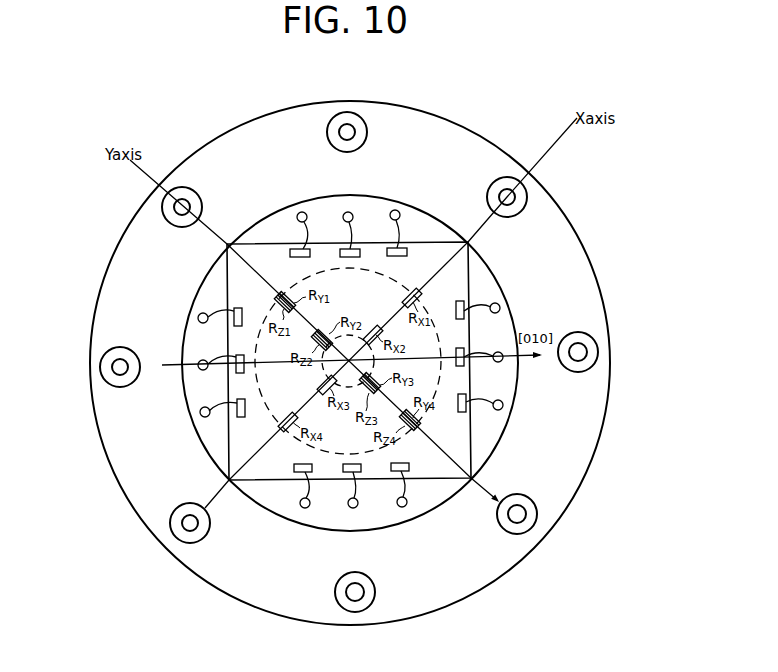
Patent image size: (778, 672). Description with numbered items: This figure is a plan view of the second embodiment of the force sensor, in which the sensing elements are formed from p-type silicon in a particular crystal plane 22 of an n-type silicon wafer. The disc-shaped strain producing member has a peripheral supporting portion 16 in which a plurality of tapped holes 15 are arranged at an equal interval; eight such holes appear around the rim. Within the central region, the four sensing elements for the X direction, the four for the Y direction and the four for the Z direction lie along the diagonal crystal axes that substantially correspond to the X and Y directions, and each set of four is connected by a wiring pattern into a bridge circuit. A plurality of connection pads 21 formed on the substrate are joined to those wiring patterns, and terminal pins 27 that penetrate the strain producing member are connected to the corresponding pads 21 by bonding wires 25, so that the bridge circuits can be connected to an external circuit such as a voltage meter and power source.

The tapped holes 15 is at (111, 363).
The supporting portion 16 is at (113, 419).
The connection pads 21 is at (342, 243).
The {001} plane 22 is at (432, 250).
The bonding wires 25 is at (353, 246).
The terminal pins 27 is at (352, 216).